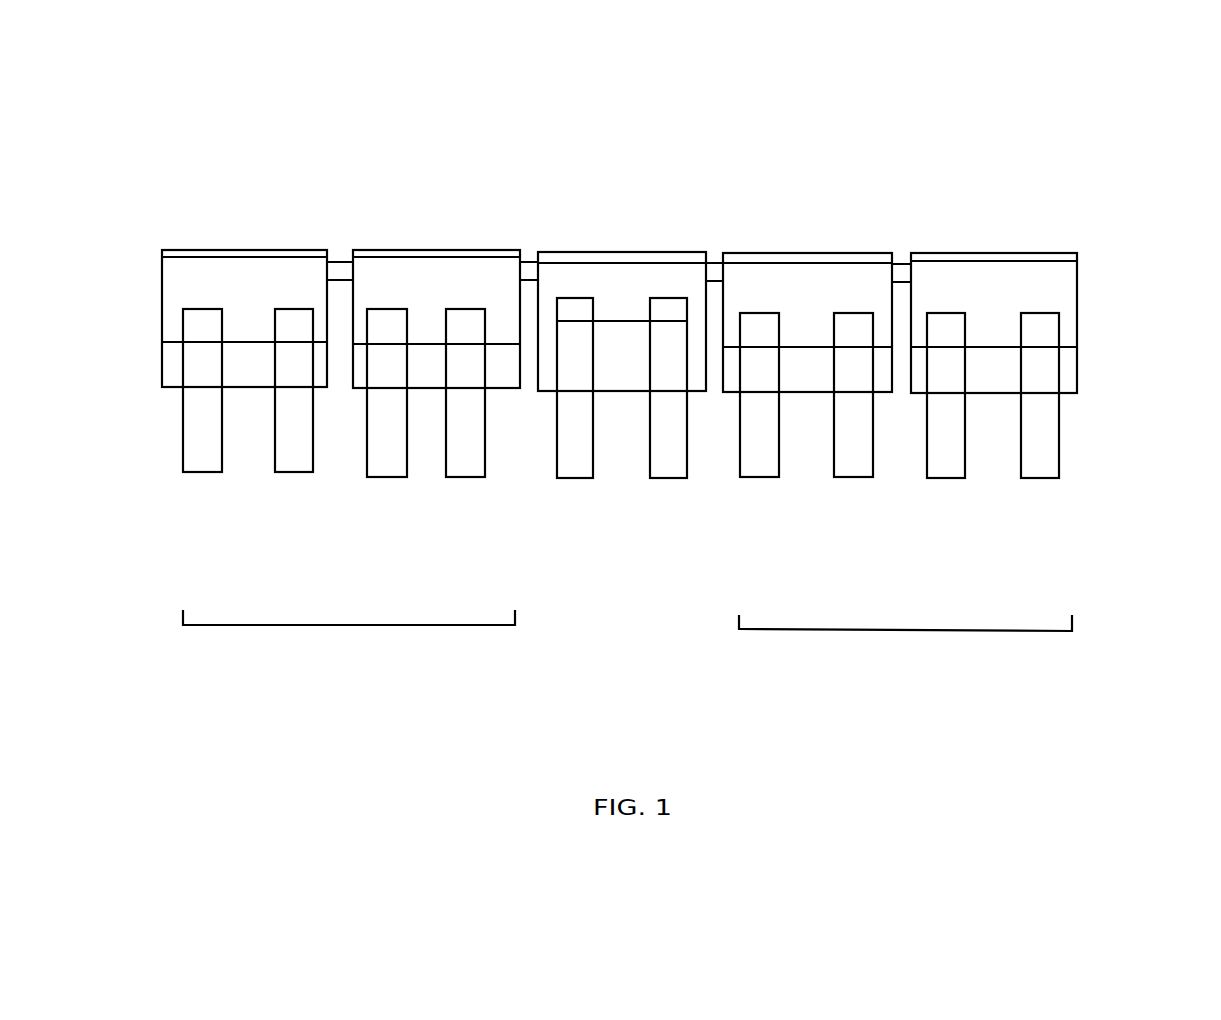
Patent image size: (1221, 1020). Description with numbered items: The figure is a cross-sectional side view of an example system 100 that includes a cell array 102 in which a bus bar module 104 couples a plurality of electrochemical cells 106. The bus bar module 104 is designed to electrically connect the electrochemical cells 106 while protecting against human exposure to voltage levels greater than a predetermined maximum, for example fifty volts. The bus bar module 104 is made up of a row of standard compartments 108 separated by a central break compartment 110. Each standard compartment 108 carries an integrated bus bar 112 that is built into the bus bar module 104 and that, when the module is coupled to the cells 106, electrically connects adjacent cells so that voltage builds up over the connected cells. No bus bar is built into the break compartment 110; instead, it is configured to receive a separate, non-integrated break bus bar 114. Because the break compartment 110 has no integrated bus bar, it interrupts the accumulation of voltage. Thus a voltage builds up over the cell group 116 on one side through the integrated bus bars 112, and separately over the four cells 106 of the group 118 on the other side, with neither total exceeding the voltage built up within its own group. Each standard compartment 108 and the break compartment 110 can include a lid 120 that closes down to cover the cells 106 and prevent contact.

The system 100 is at (633, 115).
The cell array 102 is at (168, 452).
The bus bar module 104 is at (140, 397).
The electrochemical cells 106 is at (203, 477).
The standard compartments 108 is at (257, 245).
The break compartment 110 is at (583, 245).
The integrated bus bar 112 is at (175, 341).
The break bus bar 114 is at (620, 312).
The cell group 116 is at (349, 634).
The cell group 118 is at (905, 635).
The lid 120 is at (163, 252).